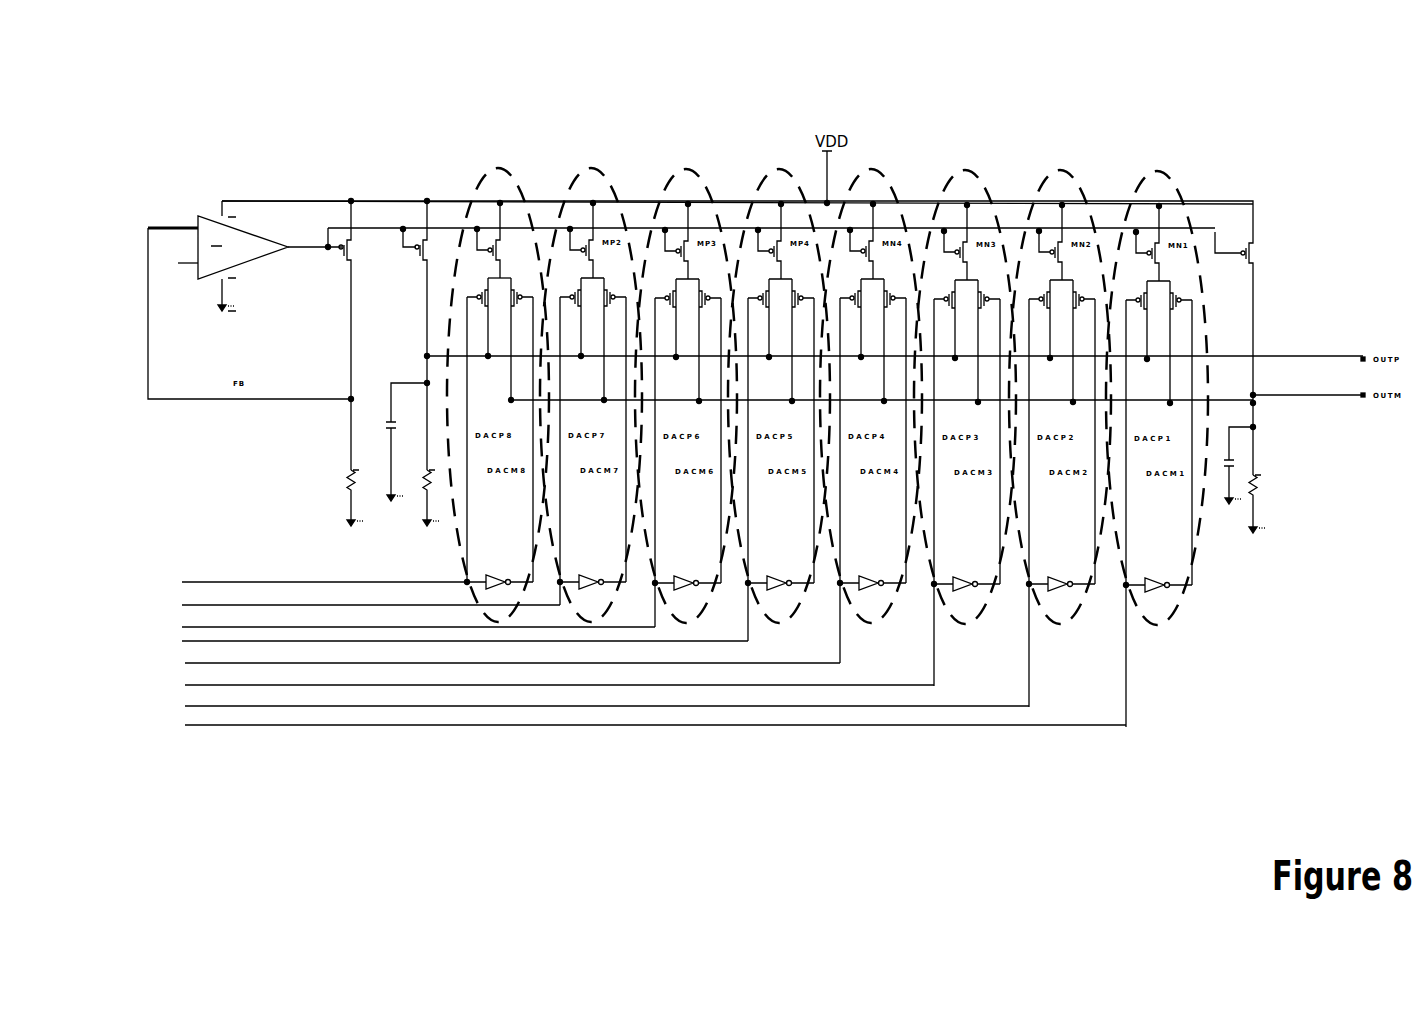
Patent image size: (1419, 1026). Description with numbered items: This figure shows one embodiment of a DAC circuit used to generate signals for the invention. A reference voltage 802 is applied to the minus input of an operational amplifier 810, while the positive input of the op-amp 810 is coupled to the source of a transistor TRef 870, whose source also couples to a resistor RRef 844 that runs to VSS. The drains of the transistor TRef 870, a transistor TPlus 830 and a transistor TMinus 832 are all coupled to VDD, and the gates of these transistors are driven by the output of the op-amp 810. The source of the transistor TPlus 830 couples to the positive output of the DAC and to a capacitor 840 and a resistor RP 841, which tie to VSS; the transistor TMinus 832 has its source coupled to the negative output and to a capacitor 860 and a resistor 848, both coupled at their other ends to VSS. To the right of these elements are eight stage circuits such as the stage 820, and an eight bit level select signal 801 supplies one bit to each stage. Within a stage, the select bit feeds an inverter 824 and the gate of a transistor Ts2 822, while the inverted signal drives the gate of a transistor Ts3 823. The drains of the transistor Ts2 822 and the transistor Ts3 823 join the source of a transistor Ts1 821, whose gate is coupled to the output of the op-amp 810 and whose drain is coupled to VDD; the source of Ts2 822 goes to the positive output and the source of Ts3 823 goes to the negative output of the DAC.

The level select signal 801 is at (182, 732).
The reference voltage 802 is at (166, 262).
The operational amplifier 810 is at (204, 211).
The stage 820 is at (491, 167).
The transistor Ts1 821 is at (501, 244).
The transistor Ts2 822 is at (481, 277).
The transistor Ts3 823 is at (520, 275).
The inverter 824 is at (499, 566).
The transistor TPlus 830 is at (420, 217).
The transistor TMinus 832 is at (1289, 336).
The capacitor CP 840 is at (391, 442).
The resistor RP 841 is at (417, 498).
The resistor RRef 844 is at (332, 495).
The resistor RM 848 is at (1263, 504).
The capacitor CM 860 is at (1230, 457).
The transistor TRef 870 is at (363, 335).